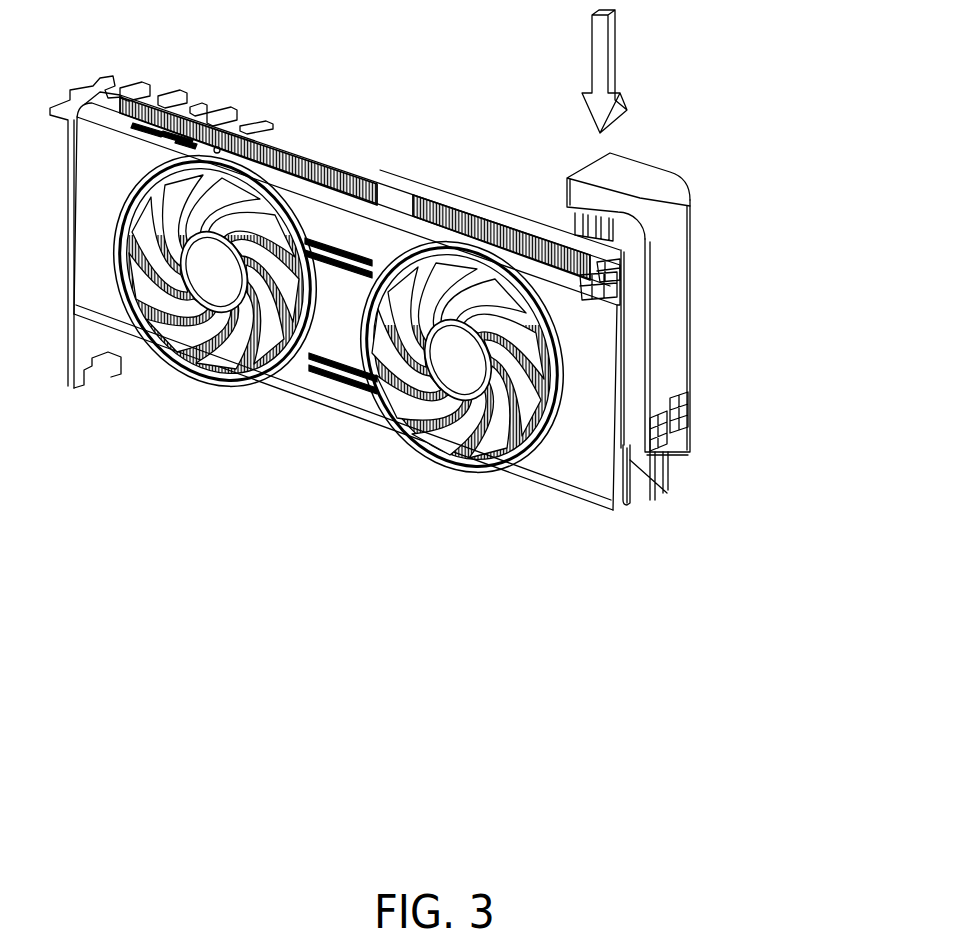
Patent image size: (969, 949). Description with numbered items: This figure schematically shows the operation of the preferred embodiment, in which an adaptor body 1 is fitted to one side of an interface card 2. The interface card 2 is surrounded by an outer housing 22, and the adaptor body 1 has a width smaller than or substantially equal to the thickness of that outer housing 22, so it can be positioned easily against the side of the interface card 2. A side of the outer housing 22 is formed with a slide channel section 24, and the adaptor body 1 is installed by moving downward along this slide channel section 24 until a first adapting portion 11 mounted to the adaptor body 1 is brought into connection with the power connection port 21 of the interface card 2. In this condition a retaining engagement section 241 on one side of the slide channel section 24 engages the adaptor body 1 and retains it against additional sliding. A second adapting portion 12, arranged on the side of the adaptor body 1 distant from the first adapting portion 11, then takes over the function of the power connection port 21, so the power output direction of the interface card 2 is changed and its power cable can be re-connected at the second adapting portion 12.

The adaptor body 1 is at (673, 291).
The first adapting portion 11 is at (565, 220).
The second adapting portion 12 is at (683, 397).
The interface card 2 is at (382, 355).
The power connection port 21 is at (596, 300).
The outer housing 22 is at (557, 502).
The slide channel section 24 is at (626, 520).
The retaining engagement section 241 is at (633, 458).